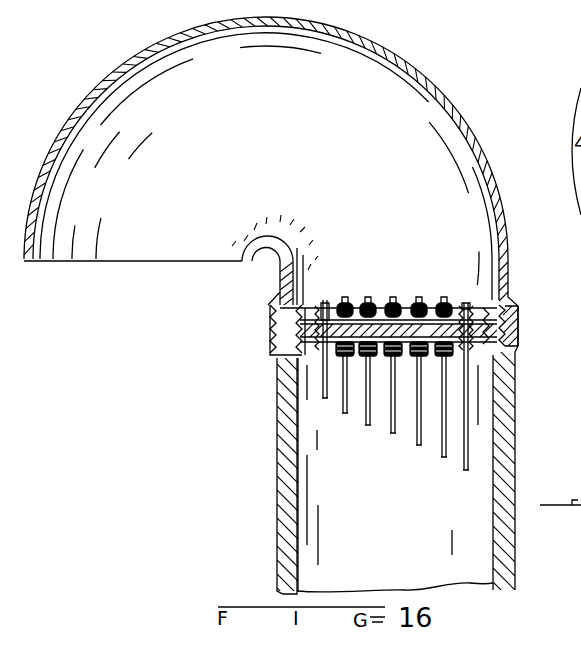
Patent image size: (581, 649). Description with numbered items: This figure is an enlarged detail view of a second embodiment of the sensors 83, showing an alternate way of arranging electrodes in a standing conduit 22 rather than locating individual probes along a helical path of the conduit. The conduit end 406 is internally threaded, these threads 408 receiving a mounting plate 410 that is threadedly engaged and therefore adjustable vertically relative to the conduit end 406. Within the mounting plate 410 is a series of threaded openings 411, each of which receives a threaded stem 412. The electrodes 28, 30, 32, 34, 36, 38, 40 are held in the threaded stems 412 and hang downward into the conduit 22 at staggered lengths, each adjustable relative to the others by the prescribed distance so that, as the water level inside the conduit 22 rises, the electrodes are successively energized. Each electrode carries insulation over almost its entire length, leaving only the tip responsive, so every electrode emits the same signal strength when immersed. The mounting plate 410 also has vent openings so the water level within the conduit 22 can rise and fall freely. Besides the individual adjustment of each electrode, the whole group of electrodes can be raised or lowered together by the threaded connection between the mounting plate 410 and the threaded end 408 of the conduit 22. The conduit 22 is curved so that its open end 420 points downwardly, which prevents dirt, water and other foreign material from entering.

The sensors 83 is at (470, 118).
The open end 420 is at (36, 262).
The conduit 22 is at (513, 447).
The conduit end 406 is at (513, 306).
The mounting plate 410 is at (312, 335).
The threaded stem 412 is at (366, 300).
The threaded openings 411 is at (325, 302).
The threads 408 is at (496, 316).
The electrode 28 is at (325, 400).
The electrode 30 is at (346, 415).
The electrode 32 is at (367, 427).
The electrode 34 is at (394, 435).
The electrode 36 is at (420, 448).
The electrode 38 is at (445, 460).
The electrode 40 is at (467, 472).